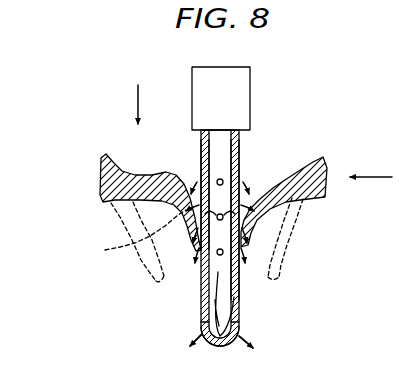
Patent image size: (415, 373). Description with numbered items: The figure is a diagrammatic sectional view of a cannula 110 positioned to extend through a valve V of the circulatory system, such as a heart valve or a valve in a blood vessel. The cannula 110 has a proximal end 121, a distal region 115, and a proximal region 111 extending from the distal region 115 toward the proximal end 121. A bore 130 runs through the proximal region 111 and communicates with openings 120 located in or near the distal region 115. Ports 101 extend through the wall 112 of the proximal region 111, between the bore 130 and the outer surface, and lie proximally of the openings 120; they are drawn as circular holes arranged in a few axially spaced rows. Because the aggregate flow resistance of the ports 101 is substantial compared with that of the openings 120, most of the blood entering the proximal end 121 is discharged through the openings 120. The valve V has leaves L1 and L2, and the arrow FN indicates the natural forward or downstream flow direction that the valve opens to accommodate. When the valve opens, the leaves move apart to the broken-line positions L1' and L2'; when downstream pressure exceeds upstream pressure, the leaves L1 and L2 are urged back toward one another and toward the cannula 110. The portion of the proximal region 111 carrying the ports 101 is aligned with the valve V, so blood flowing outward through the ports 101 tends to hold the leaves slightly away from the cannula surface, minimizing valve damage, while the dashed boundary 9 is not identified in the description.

The cannula 110 is at (190, 160).
The proximal region 111 is at (241, 163).
The wall 112 is at (241, 143).
The proximal end 121 is at (201, 141).
The bore 130 is at (218, 133).
The ports 101 is at (217, 256).
The distal region 115 is at (240, 298).
The openings 120 is at (201, 330).
The tissue boundary 9 is at (138, 236).
The leaf L1 is at (124, 199).
The leaf L2 is at (310, 195).
The open position of leaf L1' is at (105, 242).
The open position of leaf L2' is at (317, 239).
The natural forward flow direction FN is at (126, 102).
The valve V is at (378, 177).